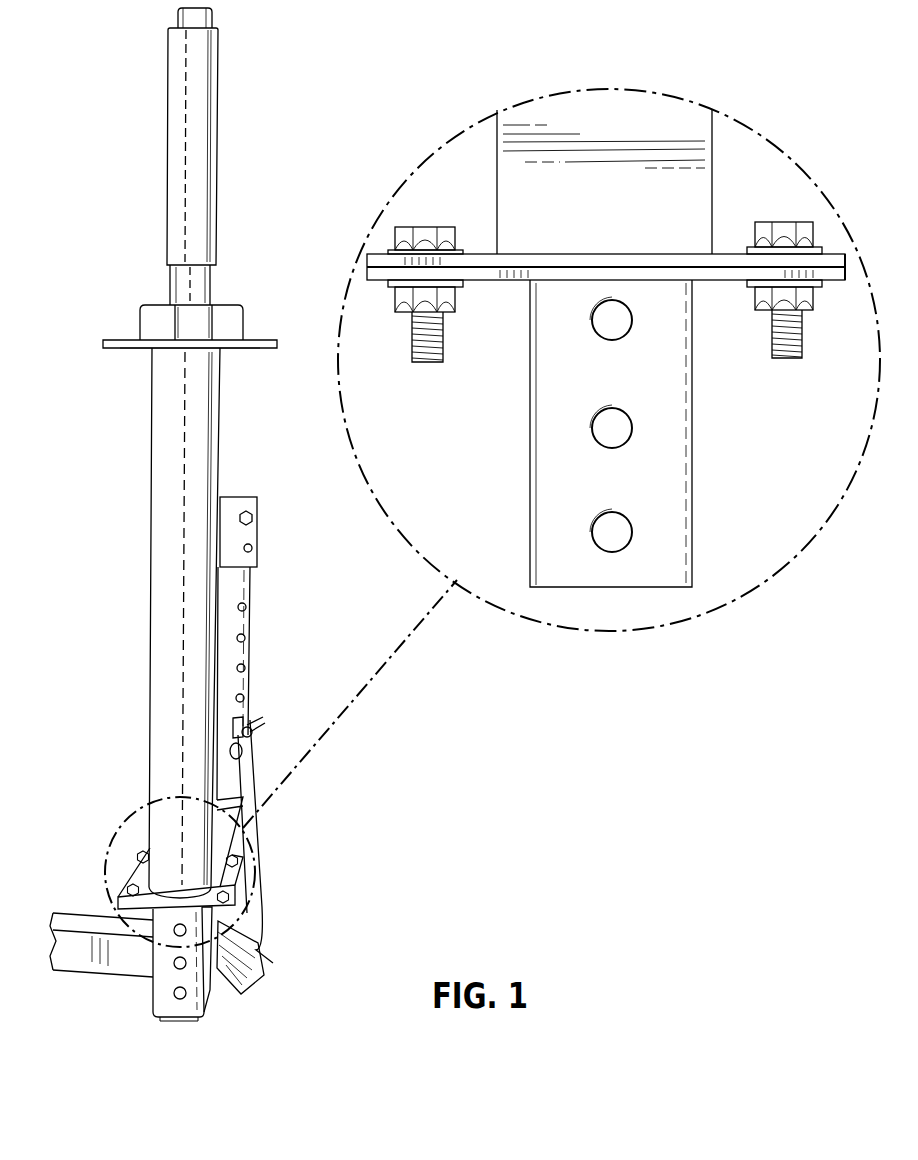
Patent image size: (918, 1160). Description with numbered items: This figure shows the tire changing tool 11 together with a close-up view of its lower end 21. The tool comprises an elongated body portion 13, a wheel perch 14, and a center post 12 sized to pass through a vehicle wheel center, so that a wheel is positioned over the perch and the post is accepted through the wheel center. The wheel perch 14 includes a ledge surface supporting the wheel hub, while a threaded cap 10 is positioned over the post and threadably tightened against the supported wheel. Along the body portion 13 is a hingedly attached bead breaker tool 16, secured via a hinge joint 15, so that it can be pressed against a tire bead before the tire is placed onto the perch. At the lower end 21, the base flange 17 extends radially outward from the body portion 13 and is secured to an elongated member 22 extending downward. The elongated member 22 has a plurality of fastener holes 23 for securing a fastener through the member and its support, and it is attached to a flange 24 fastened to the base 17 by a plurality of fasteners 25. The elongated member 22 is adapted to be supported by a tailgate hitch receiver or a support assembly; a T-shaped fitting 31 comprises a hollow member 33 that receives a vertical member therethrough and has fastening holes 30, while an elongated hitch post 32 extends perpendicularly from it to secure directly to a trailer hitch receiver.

The threaded cap 10 is at (158, 312).
The tire changing tool 11 is at (70, 258).
The center post 12 is at (210, 90).
The elongated body portion 13 is at (152, 588).
The wheel perch 14 is at (270, 302).
The hinge joint 15 is at (257, 533).
The bead breaker tool 16 is at (263, 970).
The base flange 17 is at (845, 250).
The lower end 21 is at (98, 787).
The elongated member 22 is at (692, 437).
The fastener holes 23 is at (632, 528).
The flange 24 is at (847, 282).
The nut and bolt fasteners 25 is at (428, 227).
The fastening holes 30 is at (180, 995).
The T-shaped fitting 31 is at (112, 1018).
The hitch post 32 is at (85, 915).
The hollow member 33 is at (213, 985).